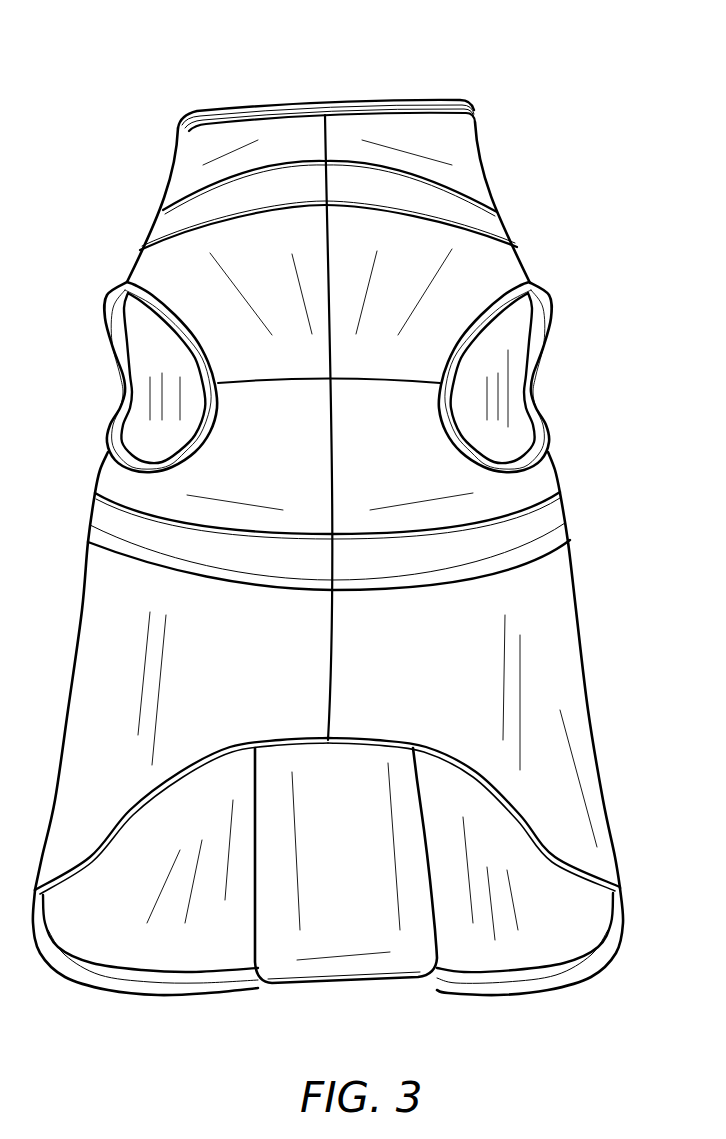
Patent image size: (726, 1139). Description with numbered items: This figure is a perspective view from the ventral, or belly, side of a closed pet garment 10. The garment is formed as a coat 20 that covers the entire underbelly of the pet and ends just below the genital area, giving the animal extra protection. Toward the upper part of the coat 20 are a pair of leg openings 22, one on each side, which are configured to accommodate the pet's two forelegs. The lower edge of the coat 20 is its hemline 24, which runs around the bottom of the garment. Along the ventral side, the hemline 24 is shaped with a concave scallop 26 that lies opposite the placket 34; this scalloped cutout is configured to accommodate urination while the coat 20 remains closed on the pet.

The pet garment 10 is at (122, 84).
The coat 20 is at (452, 147).
The leg openings 22 is at (138, 403).
The hemline 24 is at (448, 751).
The concave scallop 26 is at (227, 746).
The placket 34 is at (345, 972).